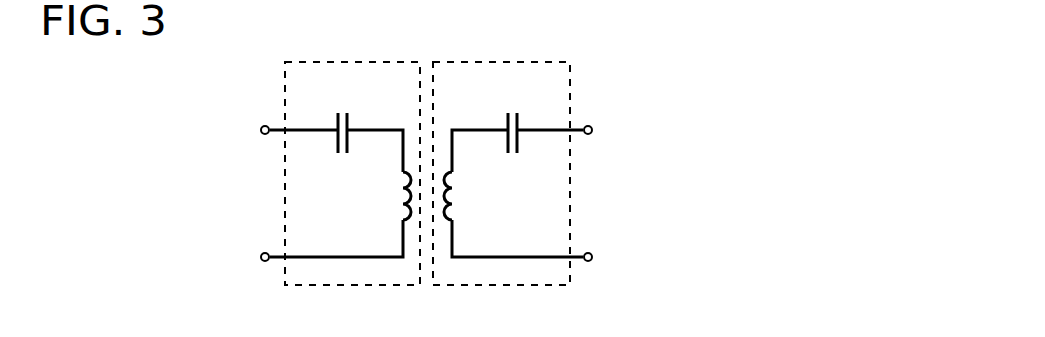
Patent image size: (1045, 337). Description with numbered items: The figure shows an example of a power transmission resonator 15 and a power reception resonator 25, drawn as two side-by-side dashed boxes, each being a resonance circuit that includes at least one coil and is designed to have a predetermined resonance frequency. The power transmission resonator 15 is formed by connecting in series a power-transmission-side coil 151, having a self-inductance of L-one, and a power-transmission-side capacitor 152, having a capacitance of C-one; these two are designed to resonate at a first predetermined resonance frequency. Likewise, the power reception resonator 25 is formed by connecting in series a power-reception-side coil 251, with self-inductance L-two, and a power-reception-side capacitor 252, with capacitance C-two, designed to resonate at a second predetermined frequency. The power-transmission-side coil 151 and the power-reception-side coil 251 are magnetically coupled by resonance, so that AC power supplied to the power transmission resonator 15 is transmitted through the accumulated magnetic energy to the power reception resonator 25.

The power transmission resonator 15 is at (285, 98).
The power reception resonator 25 is at (572, 93).
The power-transmission-side coil 151 is at (388, 215).
The power-transmission-side capacitor 152 is at (328, 142).
The power-reception-side coil 251 is at (463, 215).
The power-reception-side capacitor 252 is at (530, 143).